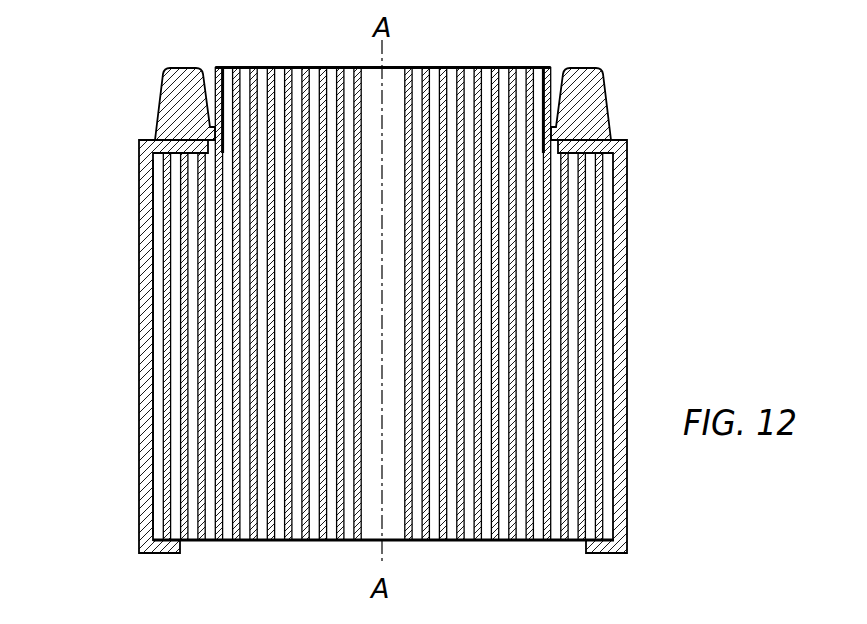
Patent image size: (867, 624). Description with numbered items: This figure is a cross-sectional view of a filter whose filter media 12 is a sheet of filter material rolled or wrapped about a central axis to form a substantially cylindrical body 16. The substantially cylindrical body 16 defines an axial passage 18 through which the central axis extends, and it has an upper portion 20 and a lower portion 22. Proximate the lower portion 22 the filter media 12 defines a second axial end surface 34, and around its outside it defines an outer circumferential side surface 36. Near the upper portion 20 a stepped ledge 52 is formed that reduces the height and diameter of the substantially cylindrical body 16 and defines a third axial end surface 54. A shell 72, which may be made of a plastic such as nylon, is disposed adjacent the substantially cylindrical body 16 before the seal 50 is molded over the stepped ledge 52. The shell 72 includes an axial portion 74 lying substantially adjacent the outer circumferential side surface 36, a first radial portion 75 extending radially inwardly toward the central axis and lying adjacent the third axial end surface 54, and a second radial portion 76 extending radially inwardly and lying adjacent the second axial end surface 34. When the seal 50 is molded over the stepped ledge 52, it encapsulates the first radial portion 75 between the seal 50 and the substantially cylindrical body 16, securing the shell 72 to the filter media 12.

The filter media 12 is at (179, 433).
The substantially cylindrical body 16 is at (613, 322).
The axial passage 18 is at (393, 82).
The upper portion 20 is at (624, 93).
The lower portion 22 is at (113, 534).
The second axial end surface 34 is at (243, 541).
The outer circumferential side surface 36 is at (152, 332).
The seal 50 is at (149, 88).
The stepped ledge 52 is at (190, 51).
The third axial end surface 54 is at (212, 152).
The shell 72 is at (115, 327).
The axial portion 74 is at (148, 295).
The first radial portion 75 is at (168, 152).
The second radial portion 76 is at (158, 553).